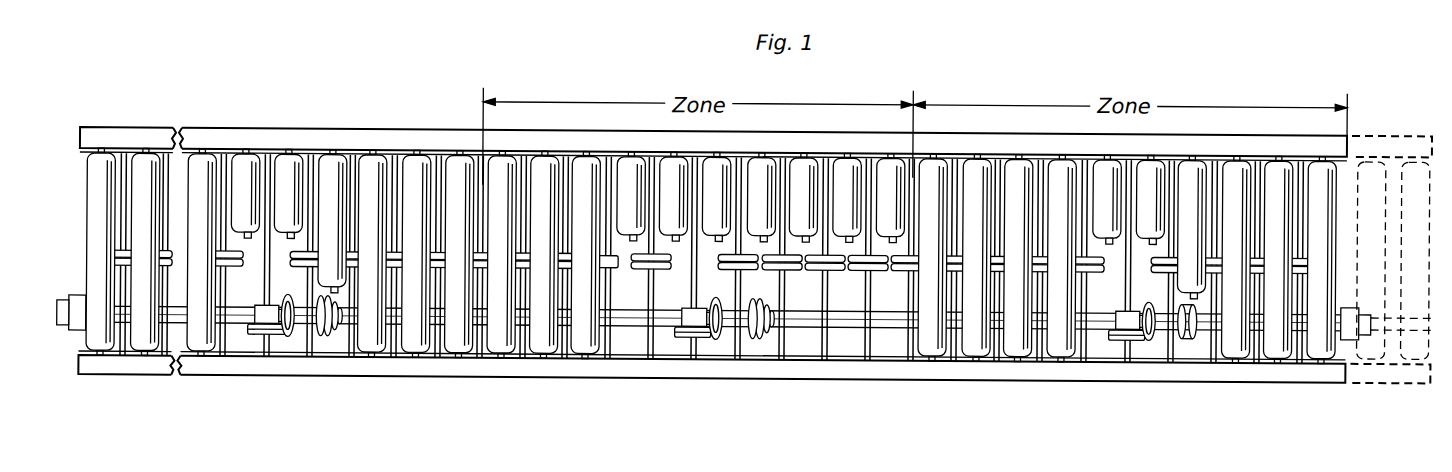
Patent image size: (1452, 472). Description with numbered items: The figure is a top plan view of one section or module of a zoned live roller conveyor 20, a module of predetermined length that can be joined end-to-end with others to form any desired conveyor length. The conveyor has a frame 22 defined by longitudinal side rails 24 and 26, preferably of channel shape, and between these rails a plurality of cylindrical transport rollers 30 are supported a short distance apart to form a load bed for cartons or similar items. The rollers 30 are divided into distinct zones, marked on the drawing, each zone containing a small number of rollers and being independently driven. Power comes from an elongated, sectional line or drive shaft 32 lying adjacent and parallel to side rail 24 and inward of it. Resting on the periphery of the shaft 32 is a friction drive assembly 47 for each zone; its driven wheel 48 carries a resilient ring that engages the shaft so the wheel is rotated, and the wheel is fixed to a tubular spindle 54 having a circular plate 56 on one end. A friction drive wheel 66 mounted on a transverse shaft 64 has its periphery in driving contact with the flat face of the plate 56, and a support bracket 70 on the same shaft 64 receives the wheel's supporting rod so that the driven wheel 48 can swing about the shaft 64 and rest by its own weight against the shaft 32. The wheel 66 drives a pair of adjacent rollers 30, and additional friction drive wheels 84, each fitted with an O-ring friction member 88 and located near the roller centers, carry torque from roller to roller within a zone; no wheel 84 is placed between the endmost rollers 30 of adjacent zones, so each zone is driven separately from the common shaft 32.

The live roller conveyor 20 is at (755, 249).
The frame 22 is at (885, 357).
The side rail 24 is at (1268, 365).
The side rail 26 is at (1245, 139).
The transport rollers 30 is at (502, 340).
The drive shaft 32 is at (622, 316).
The friction drive assembly 47 is at (300, 337).
The driven wheel 48 is at (1187, 331).
The tubular spindle 54 is at (748, 326).
The circular plate 56 is at (1162, 335).
The transverse shaft 64 is at (262, 342).
The friction drive wheel 66 is at (1118, 336).
The support bracket 70 is at (683, 314).
The friction drive wheels 84 is at (875, 263).
The O-ring friction member 88 is at (647, 265).